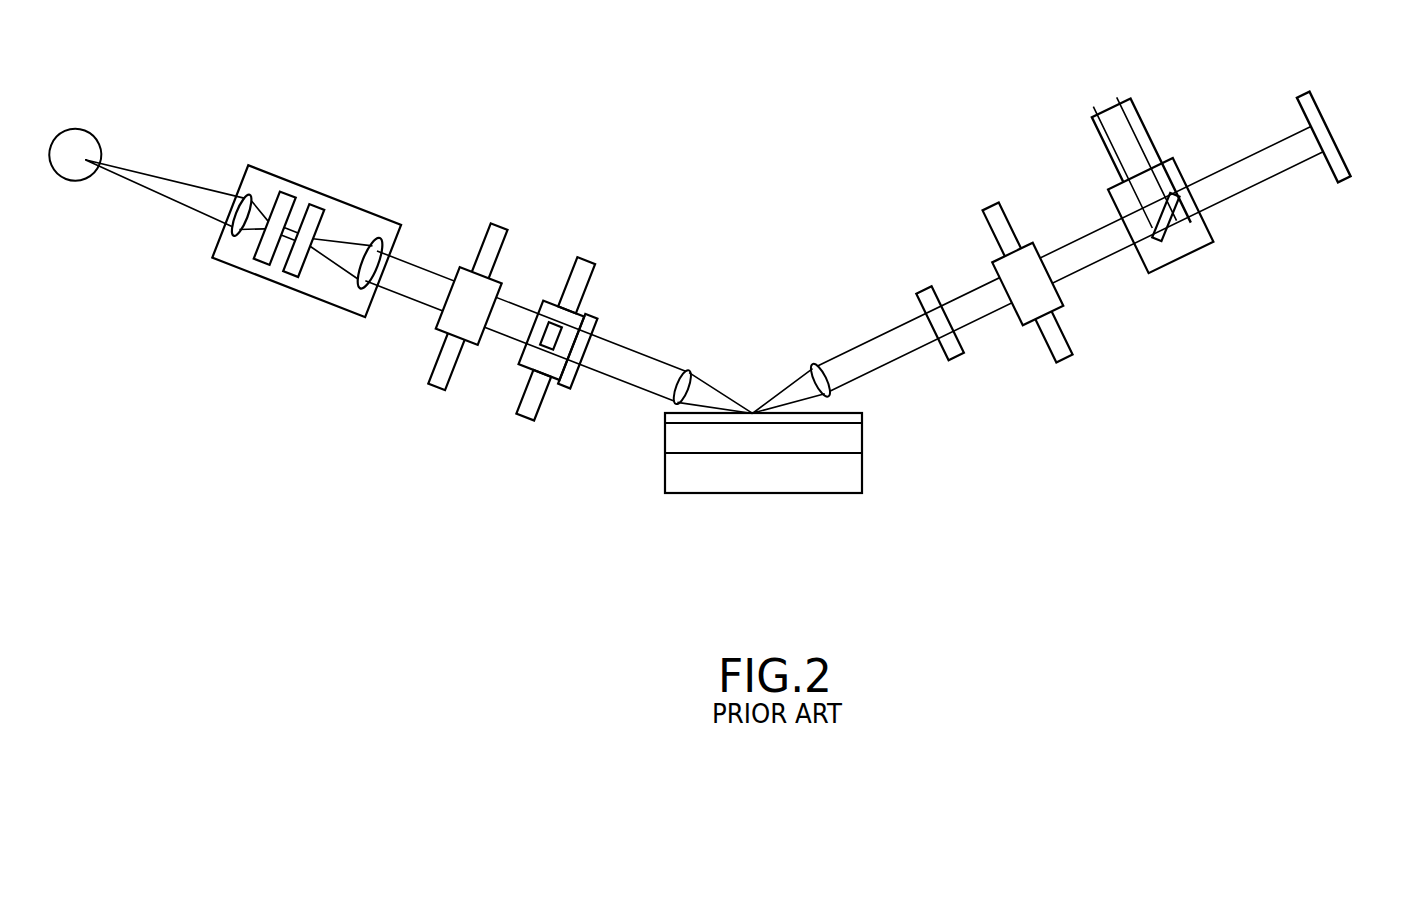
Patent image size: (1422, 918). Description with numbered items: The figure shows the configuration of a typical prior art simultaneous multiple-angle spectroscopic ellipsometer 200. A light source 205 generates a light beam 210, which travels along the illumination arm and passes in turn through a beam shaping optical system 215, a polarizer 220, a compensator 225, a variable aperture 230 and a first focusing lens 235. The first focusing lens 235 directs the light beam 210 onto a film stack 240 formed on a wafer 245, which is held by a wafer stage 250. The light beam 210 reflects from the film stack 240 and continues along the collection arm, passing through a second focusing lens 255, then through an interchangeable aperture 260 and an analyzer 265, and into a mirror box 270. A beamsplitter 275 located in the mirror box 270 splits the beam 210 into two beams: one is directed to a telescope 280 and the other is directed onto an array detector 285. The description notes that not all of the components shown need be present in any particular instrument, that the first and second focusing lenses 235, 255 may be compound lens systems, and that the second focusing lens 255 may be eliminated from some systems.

The ellipsometer 200 is at (766, 103).
The light source 205 is at (74, 128).
The light beam 210 is at (118, 177).
The beam shaping optical system 215 is at (340, 206).
The polarizer 220 is at (465, 300).
The compensator 225 is at (550, 327).
The variable aperture 230 is at (598, 330).
The first focusing lens 235 is at (687, 367).
The film stack 240 is at (864, 417).
The wafer 245 is at (675, 443).
The wafer stage 250 is at (693, 478).
The second focusing lens 255 is at (810, 368).
The interchangeable aperture 260 is at (925, 294).
The analyzer 265 is at (1023, 283).
The mirror box 270 is at (1140, 258).
The beamsplitter 275 is at (1173, 227).
The telescope 280 is at (1140, 122).
The array detector 285 is at (1323, 115).